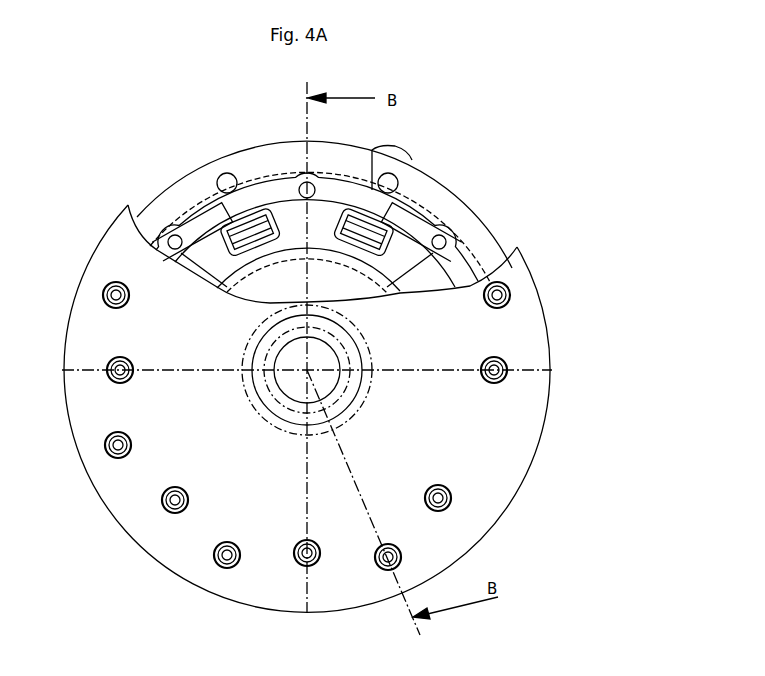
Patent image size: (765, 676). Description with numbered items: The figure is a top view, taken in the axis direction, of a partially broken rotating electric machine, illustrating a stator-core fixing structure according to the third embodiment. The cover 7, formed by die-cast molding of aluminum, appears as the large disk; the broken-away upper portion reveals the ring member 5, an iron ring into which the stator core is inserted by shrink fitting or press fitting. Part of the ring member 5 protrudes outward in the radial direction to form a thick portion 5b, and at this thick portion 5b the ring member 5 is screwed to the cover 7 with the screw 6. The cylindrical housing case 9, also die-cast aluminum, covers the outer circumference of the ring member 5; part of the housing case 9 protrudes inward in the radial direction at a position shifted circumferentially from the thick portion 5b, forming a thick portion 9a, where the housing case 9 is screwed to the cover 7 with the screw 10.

The ring member 5 is at (460, 290).
The thick portion 5b is at (433, 205).
The screw 6 is at (453, 513).
The cover 7 is at (505, 447).
The housing case 9 is at (430, 192).
The thick portion 9a is at (410, 153).
The screw 10 is at (403, 568).